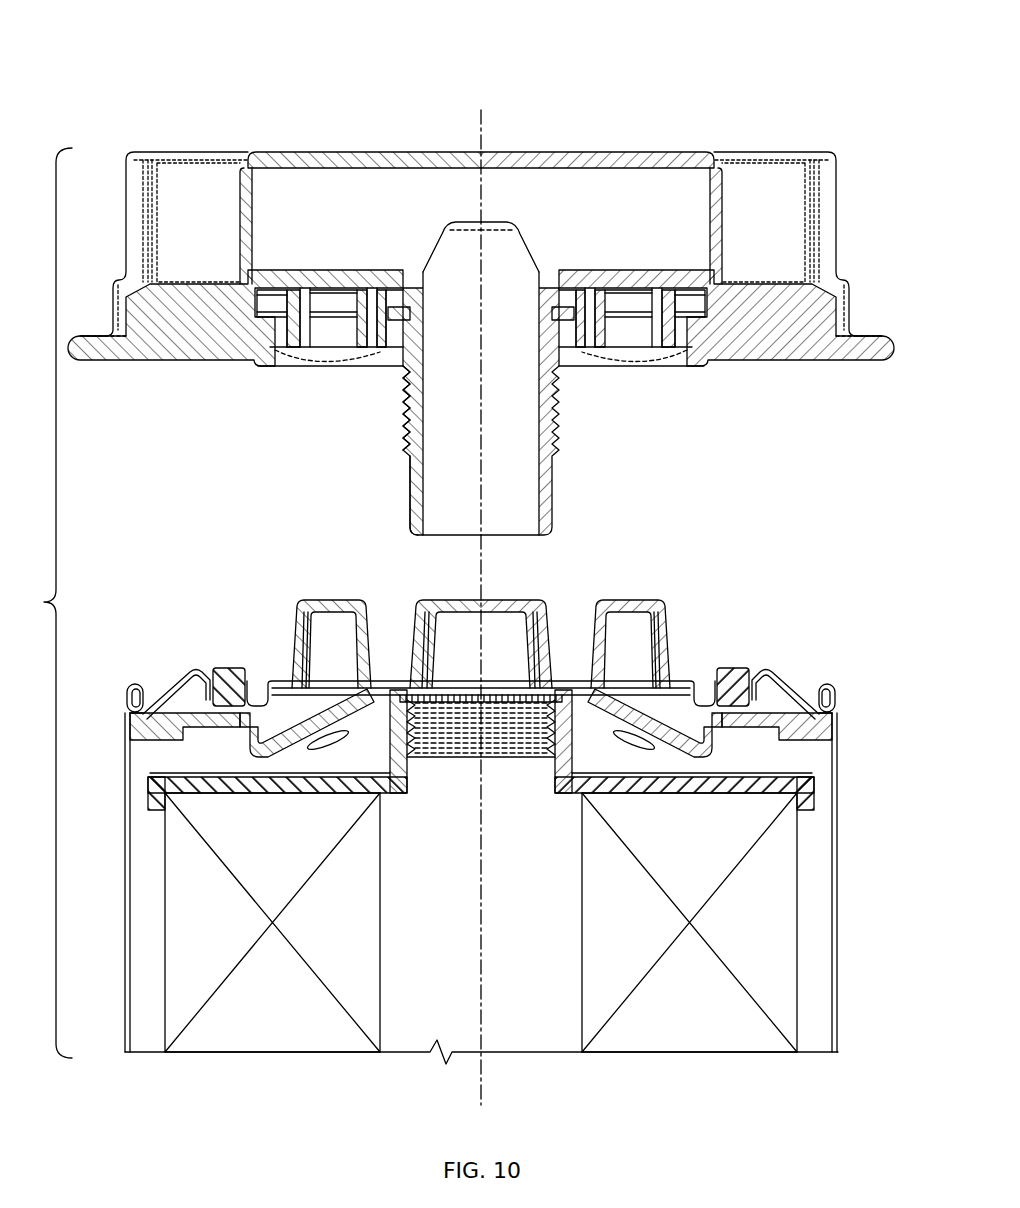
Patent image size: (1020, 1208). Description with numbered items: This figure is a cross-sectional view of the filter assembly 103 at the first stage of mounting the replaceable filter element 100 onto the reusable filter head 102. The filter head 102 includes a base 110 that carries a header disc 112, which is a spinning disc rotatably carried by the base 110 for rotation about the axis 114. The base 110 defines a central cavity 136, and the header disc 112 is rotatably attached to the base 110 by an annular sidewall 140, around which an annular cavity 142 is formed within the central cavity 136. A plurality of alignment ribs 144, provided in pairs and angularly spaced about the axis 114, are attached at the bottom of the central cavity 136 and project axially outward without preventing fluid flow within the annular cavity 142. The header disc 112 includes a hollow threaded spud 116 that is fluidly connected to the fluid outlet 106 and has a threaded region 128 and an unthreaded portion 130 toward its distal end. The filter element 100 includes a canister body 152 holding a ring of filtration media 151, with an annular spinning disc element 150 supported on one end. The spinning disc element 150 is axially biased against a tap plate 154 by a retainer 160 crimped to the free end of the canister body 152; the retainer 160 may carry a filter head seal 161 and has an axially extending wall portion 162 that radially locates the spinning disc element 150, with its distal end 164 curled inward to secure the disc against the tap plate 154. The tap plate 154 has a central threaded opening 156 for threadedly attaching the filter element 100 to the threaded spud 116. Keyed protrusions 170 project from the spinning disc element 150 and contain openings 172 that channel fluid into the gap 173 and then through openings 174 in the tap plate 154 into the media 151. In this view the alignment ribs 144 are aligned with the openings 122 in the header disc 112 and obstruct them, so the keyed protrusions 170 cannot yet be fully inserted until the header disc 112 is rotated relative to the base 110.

The filter element 100 is at (869, 703).
The filter head 102 is at (885, 246).
The filter assembly 103 is at (36, 603).
The fluid outlet 106 is at (598, 196).
The base 110 is at (783, 363).
The header disc 112 is at (661, 396).
The axis 114 is at (483, 878).
The threaded spud 116 is at (578, 491).
The openings 122 is at (297, 373).
The threaded region 128 is at (404, 405).
The unthreaded portion 130 is at (413, 495).
The central cavity 136 is at (696, 299).
The annular sidewall 140 is at (541, 332).
The annular cavity 142 is at (649, 299).
The alignment ribs 144 is at (357, 312).
The spinning disc element 150 is at (308, 581).
The filtration media 151 is at (775, 968).
The canister body 152 is at (842, 810).
The tap plate 154 is at (795, 722).
The central threaded opening 156 is at (433, 712).
The retainer 160 is at (165, 690).
The filter head seal 161 is at (746, 690).
The axially extending wall portion 162 is at (735, 690).
The distal end 164 is at (702, 690).
The keyed protrusions 170 is at (292, 620).
The openings 172 is at (315, 642).
The gap 173 is at (287, 712).
The openings 174 is at (325, 744).